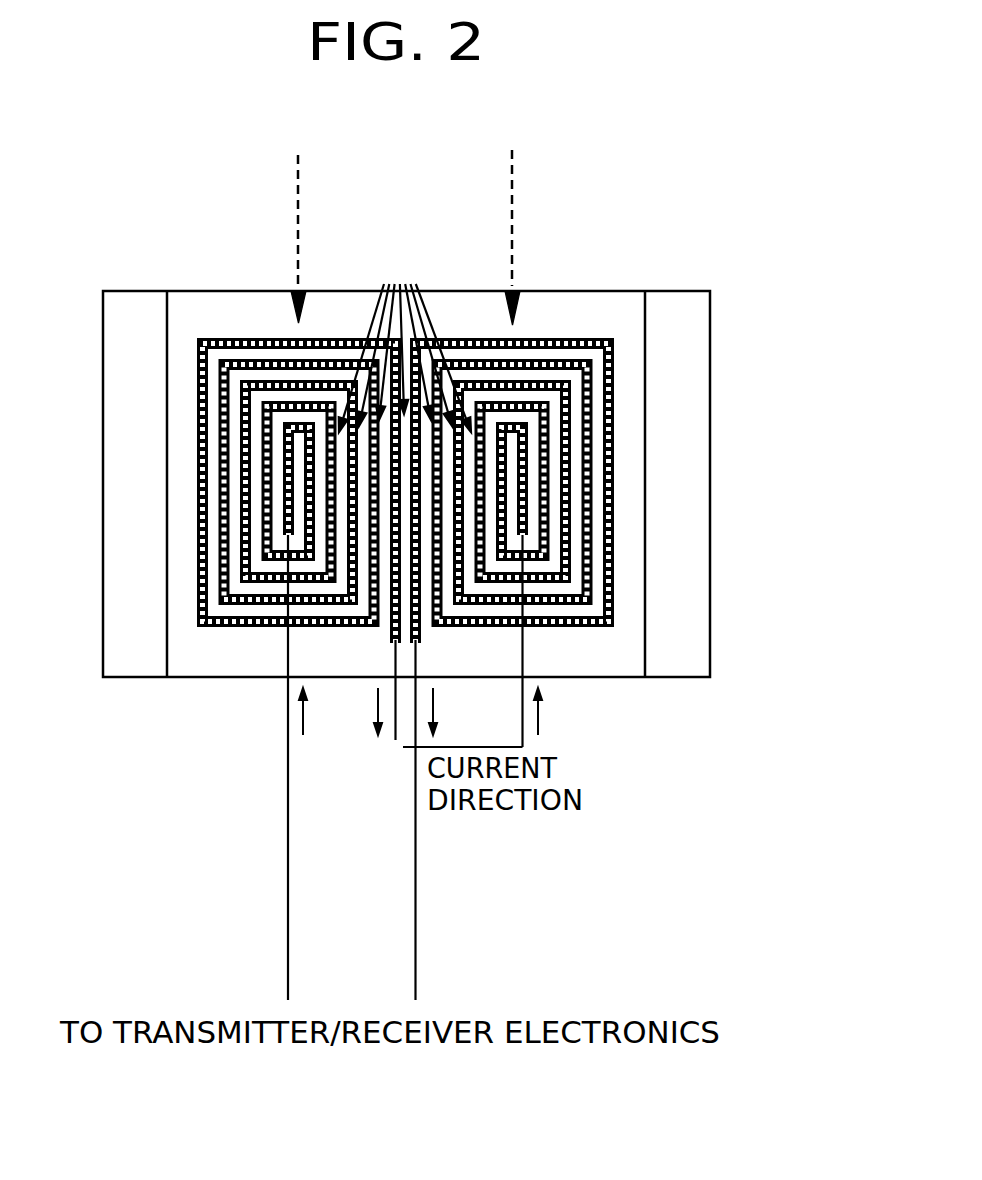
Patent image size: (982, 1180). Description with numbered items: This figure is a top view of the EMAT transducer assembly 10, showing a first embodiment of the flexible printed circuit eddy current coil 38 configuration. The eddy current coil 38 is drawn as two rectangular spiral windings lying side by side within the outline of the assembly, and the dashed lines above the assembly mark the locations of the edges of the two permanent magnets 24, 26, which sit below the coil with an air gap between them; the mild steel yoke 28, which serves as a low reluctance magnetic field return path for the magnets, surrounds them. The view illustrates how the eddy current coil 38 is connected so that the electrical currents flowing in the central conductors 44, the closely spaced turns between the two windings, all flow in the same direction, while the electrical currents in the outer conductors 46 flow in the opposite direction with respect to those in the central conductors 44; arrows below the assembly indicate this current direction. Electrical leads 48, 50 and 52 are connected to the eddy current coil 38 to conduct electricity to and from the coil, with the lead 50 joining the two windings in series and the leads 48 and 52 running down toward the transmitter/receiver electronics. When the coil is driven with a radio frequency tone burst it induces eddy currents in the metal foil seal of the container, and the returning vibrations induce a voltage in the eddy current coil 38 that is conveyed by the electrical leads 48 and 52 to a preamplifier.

The EMAT transducer assembly 10 is at (772, 462).
The permanent magnet 24 is at (200, 237).
The permanent magnet 26 is at (678, 237).
The mild steel yoke 28 is at (693, 533).
The flexible printed circuit eddy current coil 38 is at (607, 651).
The central conductors 44 is at (405, 338).
The outer conductors 46 is at (270, 446).
The electrical lead 48 is at (286, 800).
The electrical lead 50 is at (392, 753).
The electrical lead 52 is at (416, 858).